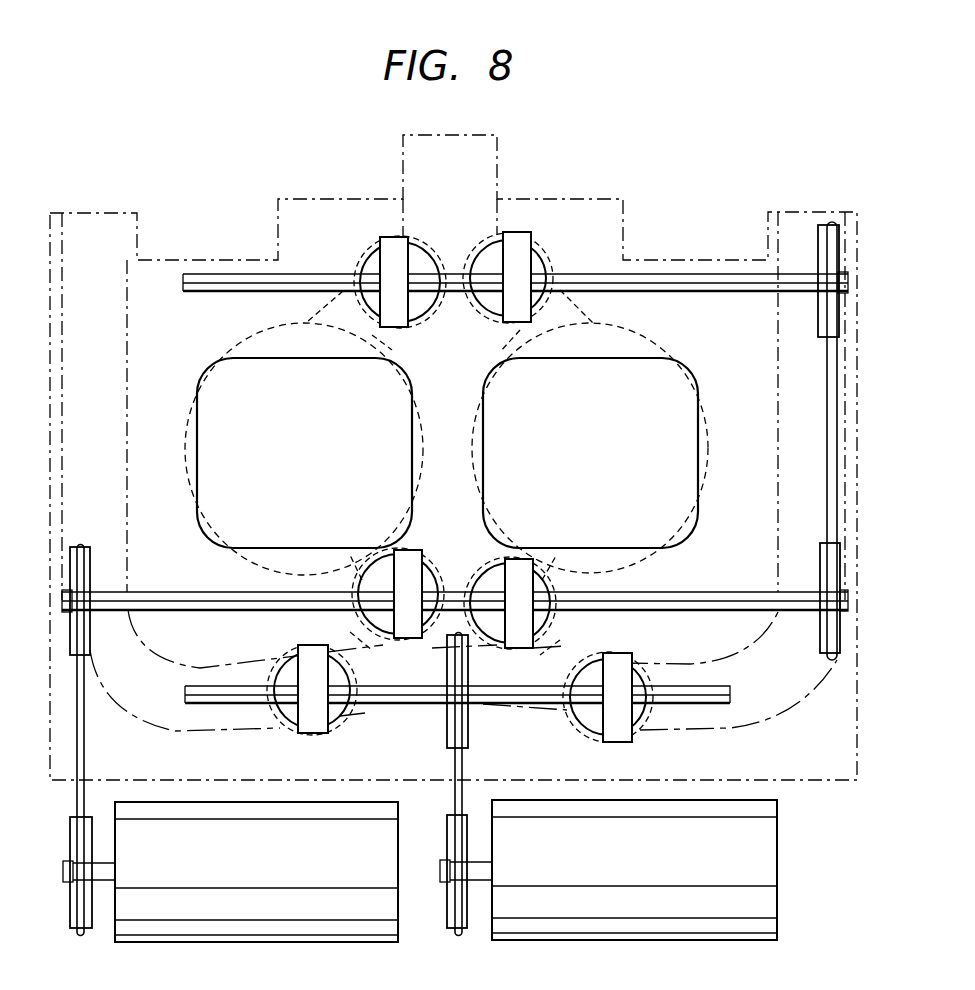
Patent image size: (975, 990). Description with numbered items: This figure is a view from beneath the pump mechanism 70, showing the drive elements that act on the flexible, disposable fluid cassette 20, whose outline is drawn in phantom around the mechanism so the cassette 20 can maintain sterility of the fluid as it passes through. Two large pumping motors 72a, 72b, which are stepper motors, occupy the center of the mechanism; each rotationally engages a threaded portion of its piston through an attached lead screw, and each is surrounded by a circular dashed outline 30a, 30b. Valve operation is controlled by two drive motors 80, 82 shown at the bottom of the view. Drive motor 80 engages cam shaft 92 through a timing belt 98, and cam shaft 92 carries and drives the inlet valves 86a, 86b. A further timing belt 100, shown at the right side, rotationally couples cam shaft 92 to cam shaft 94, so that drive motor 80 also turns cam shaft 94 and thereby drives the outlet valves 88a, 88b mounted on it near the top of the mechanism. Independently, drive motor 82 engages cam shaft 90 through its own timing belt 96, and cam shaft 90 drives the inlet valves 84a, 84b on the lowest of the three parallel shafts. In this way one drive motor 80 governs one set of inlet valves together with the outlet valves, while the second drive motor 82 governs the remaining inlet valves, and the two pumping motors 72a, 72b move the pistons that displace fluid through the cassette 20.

The pump mechanism 70 is at (841, 136).
The disposable fluid cassette 20 is at (600, 198).
The first transport belt loop 30a is at (640, 552).
The second transport belt loop 30b is at (263, 553).
The pumping motor 72a is at (619, 461).
The pumping motor 72b is at (327, 461).
The drive motor 80 is at (340, 942).
The drive motor 82 is at (722, 942).
The inlet valve 84a is at (592, 720).
The inlet valve 84b is at (289, 720).
The inlet valve 86a is at (557, 632).
The inlet valve 86b is at (359, 630).
The outlet valve 88a is at (546, 268).
The outlet valve 88b is at (377, 270).
The cam shaft 90 is at (729, 685).
The cam shaft 92 is at (732, 591).
The cam shaft 94 is at (686, 273).
The timing belt 96 is at (452, 771).
The timing belt 98 is at (73, 800).
The timing belt 100 is at (840, 395).